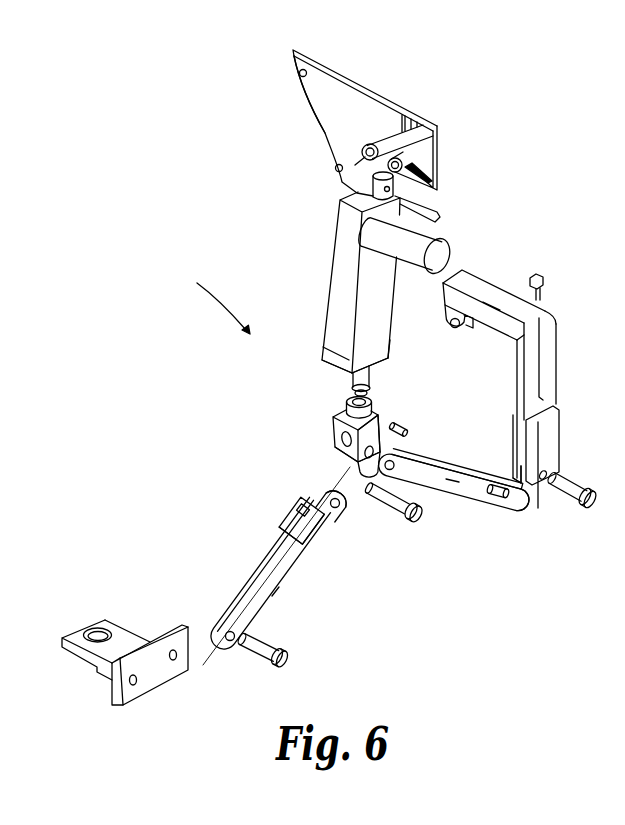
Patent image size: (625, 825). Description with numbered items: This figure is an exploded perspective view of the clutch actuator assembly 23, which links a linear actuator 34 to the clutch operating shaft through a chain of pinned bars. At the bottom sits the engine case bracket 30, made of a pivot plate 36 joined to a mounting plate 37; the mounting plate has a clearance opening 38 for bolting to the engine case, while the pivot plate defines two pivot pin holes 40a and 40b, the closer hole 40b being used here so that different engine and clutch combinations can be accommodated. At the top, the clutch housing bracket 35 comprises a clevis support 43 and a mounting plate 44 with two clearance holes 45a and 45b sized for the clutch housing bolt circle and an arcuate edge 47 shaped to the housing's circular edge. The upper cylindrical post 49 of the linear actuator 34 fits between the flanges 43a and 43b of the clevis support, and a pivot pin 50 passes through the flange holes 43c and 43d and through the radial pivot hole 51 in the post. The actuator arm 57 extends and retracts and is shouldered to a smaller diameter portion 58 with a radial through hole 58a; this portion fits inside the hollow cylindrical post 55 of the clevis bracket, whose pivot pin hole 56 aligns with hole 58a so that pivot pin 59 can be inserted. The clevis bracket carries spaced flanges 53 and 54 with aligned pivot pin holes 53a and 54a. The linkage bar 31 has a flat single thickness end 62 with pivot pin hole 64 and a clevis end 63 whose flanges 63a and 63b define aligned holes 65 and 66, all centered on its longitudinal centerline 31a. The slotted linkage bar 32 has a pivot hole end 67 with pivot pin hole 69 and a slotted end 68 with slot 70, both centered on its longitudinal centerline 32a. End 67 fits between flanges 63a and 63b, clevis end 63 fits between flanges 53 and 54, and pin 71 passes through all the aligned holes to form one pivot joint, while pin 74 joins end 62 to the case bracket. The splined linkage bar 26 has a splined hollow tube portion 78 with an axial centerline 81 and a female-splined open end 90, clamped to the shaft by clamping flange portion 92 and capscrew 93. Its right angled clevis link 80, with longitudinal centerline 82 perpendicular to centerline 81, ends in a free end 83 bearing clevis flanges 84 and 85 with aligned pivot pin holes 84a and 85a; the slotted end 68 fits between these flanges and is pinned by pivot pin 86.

The clutch actuator assembly 23 is at (210, 299).
The splined linkage bar 26 is at (531, 320).
The engine case bracket 30 is at (142, 650).
The linkage bar 31 is at (276, 590).
The longitudinal centerline 31a is at (272, 616).
The slotted linkage bar 32 is at (465, 495).
The longitudinal centerline 32a is at (401, 466).
The linear actuator 34 is at (340, 275).
The clutch housing bracket 35 is at (347, 110).
The pivot plate 36 is at (163, 694).
The mounting plate 37 is at (72, 650).
The clearance opening 38 is at (98, 632).
The pivot pin hole 40a is at (132, 686).
The pivot pin hole 40b is at (178, 658).
The clevis support 43 is at (440, 150).
The flange 43a is at (418, 148).
The flange 43b is at (393, 140).
The flange hole 43c is at (440, 168).
The flange hole 43d is at (362, 163).
The mounting plate 44 is at (320, 78).
The clearance hole 45a is at (300, 74).
The clearance hole 45b is at (334, 170).
The arcuate edge 47 is at (313, 108).
The upper cylindrical post 49 is at (340, 220).
The pivot pin 50 is at (440, 218).
The pivot hole 51 is at (386, 220).
The clevis flange 53 is at (385, 410).
The pivot pin hole 53a is at (352, 470).
The clevis flange 54 is at (334, 424).
The pivot pin hole 54a is at (340, 446).
The hollow cylindrical post 55 is at (346, 398).
The pivot pin hole 56 is at (381, 362).
The actuator arm 57 is at (323, 350).
The smaller diameter portion 58 is at (351, 387).
The radial through hole 58a is at (377, 366).
The pivot pin 59 is at (410, 421).
The flat single thickness end 62 is at (224, 608).
The clevis end 63 is at (318, 530).
The clevis end flange 63a is at (312, 535).
The clevis end flange 63b is at (298, 507).
The pivot pin hole 64 is at (236, 646).
The pivot pin hole 65 is at (341, 506).
The pivot pin hole 66 is at (317, 488).
The pivot hole end 67 is at (421, 452).
The slotted end 68 is at (510, 495).
The pivot pin hole 69 is at (344, 494).
The slot 70 is at (496, 496).
The pin 71 is at (401, 523).
The pin 74 is at (270, 665).
The splined hollow tube portion 78 is at (488, 292).
The right angled clevis link 80 is at (547, 396).
The axial centerline 81 is at (556, 345).
The longitudinal centerline 82 is at (542, 368).
The free end 83 is at (550, 435).
The clevis flange 84 is at (545, 485).
The pivot pin hole 84a is at (546, 475).
The clevis flange 85 is at (505, 430).
The pivot pin hole 85a is at (525, 467).
The pivot pin 86 is at (582, 506).
The open end 90 is at (460, 270).
The clamping flange portion 92 is at (455, 330).
The capscrew 93 is at (533, 275).